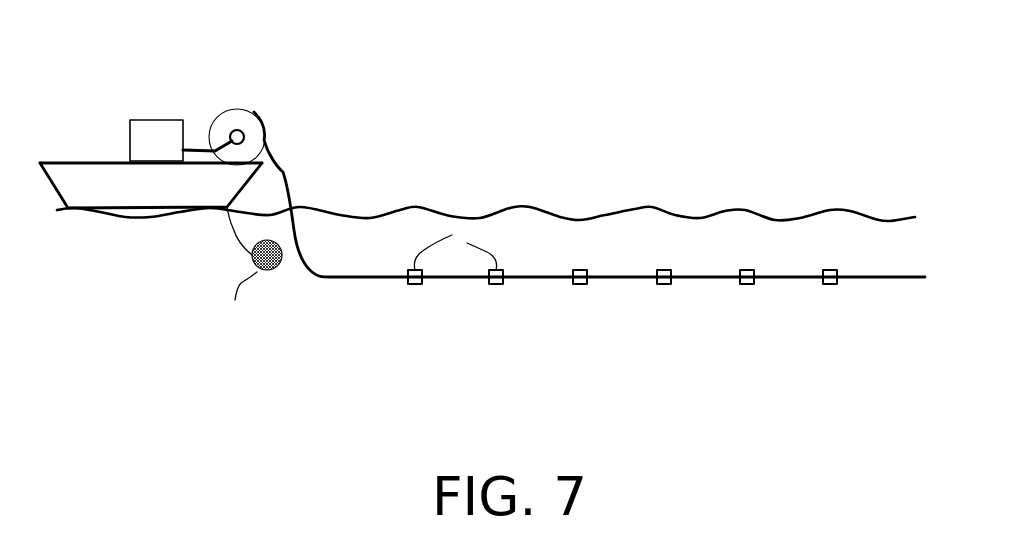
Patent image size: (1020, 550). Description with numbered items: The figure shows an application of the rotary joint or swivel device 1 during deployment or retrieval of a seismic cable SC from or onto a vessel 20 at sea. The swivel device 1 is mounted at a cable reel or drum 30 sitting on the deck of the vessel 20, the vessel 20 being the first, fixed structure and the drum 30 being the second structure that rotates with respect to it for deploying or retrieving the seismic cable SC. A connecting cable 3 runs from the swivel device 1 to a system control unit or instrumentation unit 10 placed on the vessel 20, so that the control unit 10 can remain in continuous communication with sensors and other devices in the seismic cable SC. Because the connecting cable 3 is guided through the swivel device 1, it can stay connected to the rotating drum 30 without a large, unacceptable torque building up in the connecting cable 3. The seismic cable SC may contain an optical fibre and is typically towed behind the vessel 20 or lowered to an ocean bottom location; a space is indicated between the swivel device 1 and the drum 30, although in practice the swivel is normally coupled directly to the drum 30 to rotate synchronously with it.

The rotary joint or swivel device 1 is at (237, 130).
The connecting cable 3 is at (195, 148).
The system control unit 10 is at (156, 141).
The vessel 20 is at (77, 162).
The cable drum 30 is at (260, 112).
The seismic cable SC is at (283, 170).